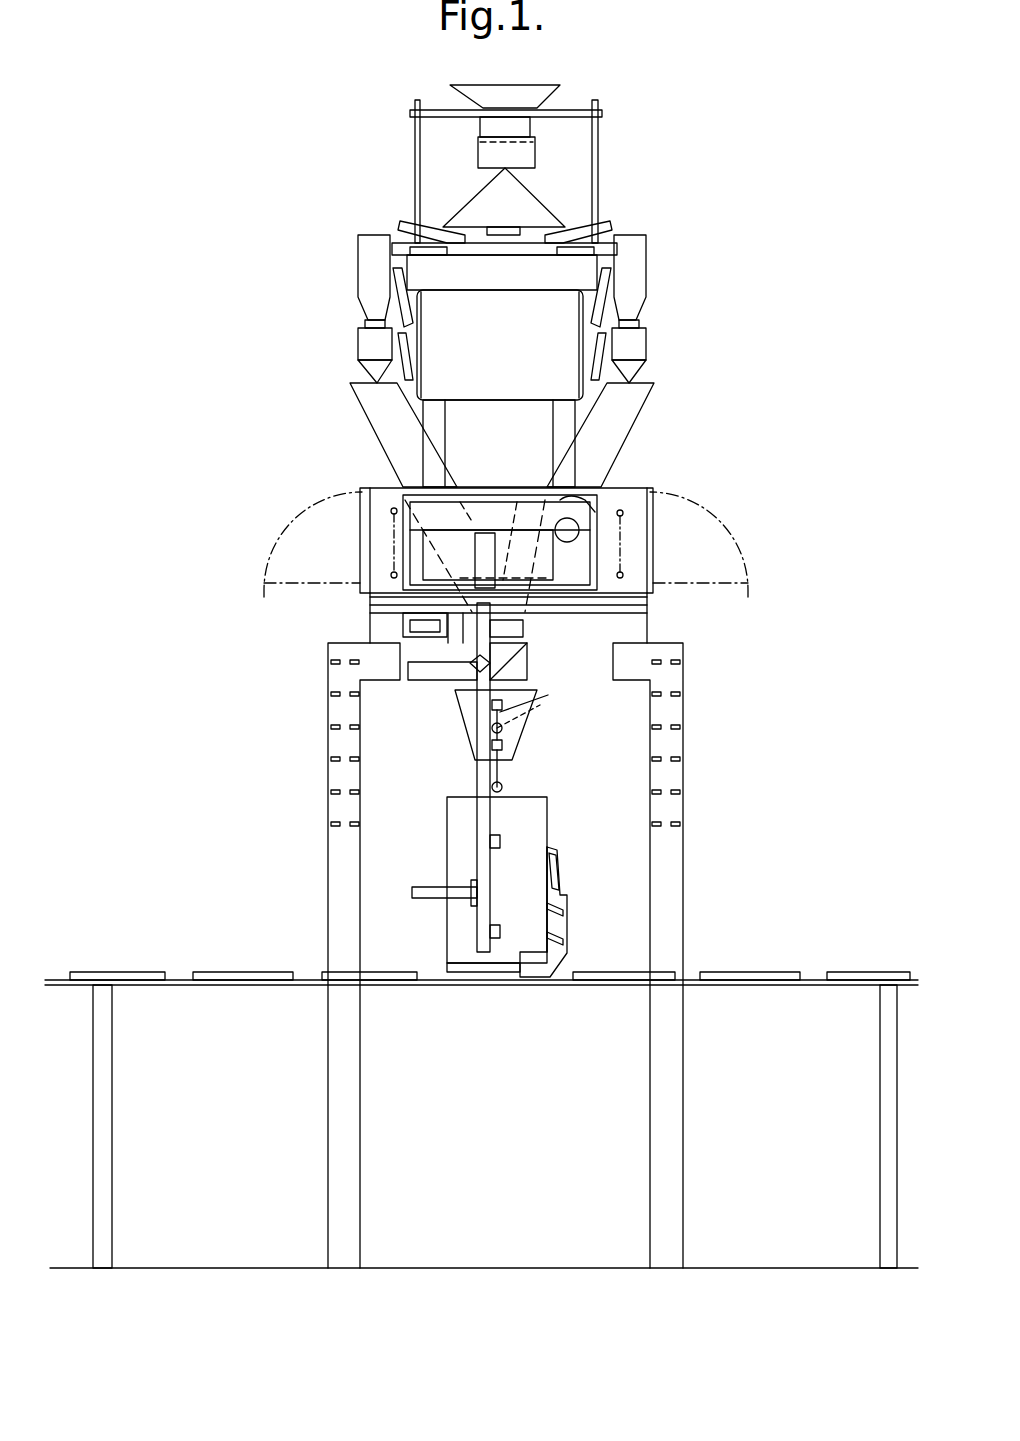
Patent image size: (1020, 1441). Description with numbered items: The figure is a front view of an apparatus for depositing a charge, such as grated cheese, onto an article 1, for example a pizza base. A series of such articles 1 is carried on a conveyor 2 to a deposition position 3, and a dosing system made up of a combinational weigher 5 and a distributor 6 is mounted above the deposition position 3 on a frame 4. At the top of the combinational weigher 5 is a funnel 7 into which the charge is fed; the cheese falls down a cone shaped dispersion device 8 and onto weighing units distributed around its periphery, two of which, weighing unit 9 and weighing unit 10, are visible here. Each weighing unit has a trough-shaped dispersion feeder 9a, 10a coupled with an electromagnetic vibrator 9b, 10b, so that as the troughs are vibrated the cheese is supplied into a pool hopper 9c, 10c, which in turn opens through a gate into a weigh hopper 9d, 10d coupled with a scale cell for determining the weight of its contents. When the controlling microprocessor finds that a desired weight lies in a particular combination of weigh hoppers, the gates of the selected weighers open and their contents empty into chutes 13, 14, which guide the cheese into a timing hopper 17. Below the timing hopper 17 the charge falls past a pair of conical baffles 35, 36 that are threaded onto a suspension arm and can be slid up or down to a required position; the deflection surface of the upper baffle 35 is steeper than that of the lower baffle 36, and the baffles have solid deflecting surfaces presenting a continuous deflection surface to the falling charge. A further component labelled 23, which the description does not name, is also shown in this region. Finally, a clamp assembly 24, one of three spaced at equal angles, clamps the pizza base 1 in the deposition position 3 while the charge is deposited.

The article 1 is at (450, 965).
The conveyor 2 is at (182, 972).
The deposition position 3 is at (494, 1012).
The frame 4 is at (330, 770).
The combinational weigher 5 is at (672, 195).
The distributor 6 is at (456, 767).
The funnel 7 is at (468, 82).
The cone shaped dispersion device 8 is at (462, 207).
The weighing unit 9 is at (383, 265).
The trough-shaped dispersion feeder 9a is at (395, 222).
The electromagnetic vibrator 9b is at (439, 257).
The pool hopper 9c is at (358, 288).
The weigh hopper 9d is at (362, 350).
The weighing unit 10 is at (615, 270).
The trough-shaped dispersion feeder 10a is at (610, 235).
The electromagnetic vibrator 10b is at (578, 257).
The pool hopper 10c is at (635, 292).
The weigh hopper 10d is at (632, 352).
The chute 13 is at (372, 436).
The chute 14 is at (632, 428).
The timing hopper 17 is at (533, 668).
The vertical shaft 23 is at (477, 782).
The clamp assembly 24 is at (575, 945).
The upper conical baffle 35 is at (507, 722).
The lower conical baffle 36 is at (500, 790).